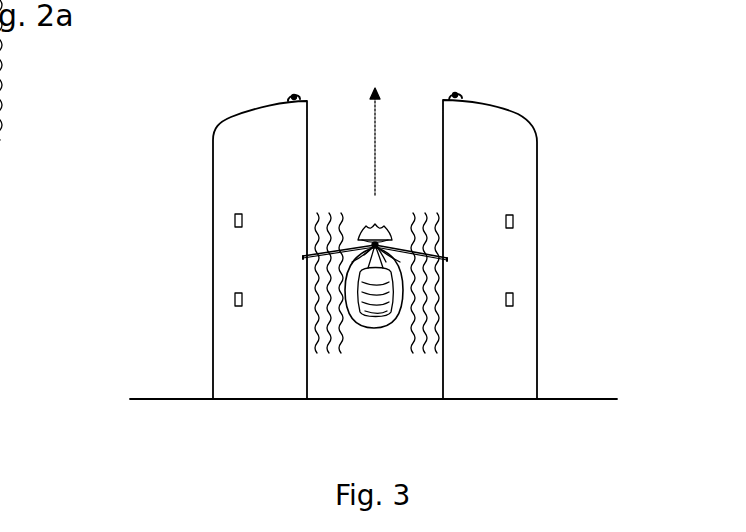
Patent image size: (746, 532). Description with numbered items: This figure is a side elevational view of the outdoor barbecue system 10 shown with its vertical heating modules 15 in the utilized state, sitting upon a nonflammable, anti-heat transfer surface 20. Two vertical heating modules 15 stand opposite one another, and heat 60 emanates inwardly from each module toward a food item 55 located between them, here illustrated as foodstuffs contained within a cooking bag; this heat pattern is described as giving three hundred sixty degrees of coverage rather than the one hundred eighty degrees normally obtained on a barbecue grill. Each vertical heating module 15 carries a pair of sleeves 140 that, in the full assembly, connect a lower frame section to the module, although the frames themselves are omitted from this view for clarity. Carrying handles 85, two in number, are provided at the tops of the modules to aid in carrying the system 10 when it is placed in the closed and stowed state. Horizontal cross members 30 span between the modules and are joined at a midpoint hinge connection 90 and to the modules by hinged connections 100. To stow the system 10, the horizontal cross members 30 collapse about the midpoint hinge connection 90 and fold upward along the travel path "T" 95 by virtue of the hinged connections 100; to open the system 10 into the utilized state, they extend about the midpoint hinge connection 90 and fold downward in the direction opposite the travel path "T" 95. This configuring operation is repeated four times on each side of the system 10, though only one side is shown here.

The system 10 is at (66, 376).
The vertical heating module 15 is at (164, 173).
The nonflammable, anti-heat transfer surface 20 is at (162, 400).
The horizontal cross member 30 is at (370, 238).
The food item 55 is at (388, 268).
The heat 60 is at (337, 357).
The carrying handle 85 is at (293, 96).
The midpoint hinge connection 90 is at (377, 262).
The travel path "T" 95 is at (395, 37).
The hinged connection 100 is at (303, 256).
The sleeve 140 is at (235, 225).